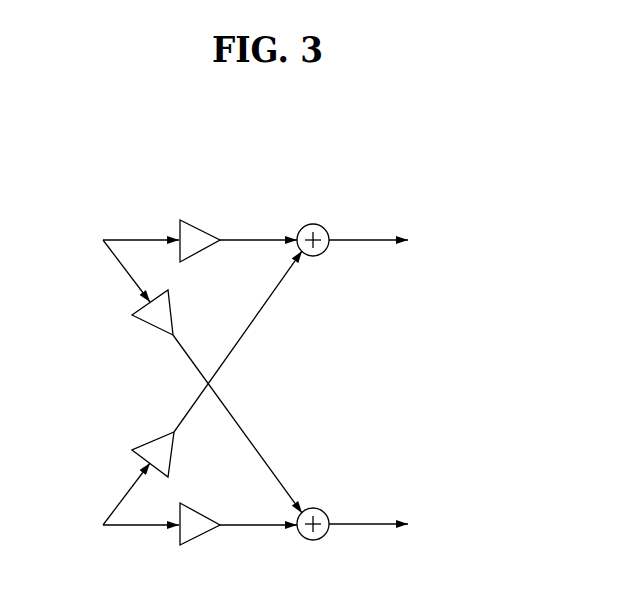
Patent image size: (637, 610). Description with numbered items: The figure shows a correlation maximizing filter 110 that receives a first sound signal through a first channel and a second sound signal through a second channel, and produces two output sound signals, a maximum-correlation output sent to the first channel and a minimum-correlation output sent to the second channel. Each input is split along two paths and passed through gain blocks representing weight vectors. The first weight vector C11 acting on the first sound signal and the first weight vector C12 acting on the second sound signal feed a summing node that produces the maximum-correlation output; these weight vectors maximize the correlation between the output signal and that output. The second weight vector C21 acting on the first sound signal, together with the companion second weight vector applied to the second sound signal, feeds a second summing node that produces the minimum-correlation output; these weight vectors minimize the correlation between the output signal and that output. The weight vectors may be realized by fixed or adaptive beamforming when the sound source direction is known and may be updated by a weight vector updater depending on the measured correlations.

The correlation maximizing filter 110 is at (300, 146).
The first weight vector C11 is at (196, 385).
The second weight vector C21 is at (140, 325).
The first weight vector C12 is at (140, 438).